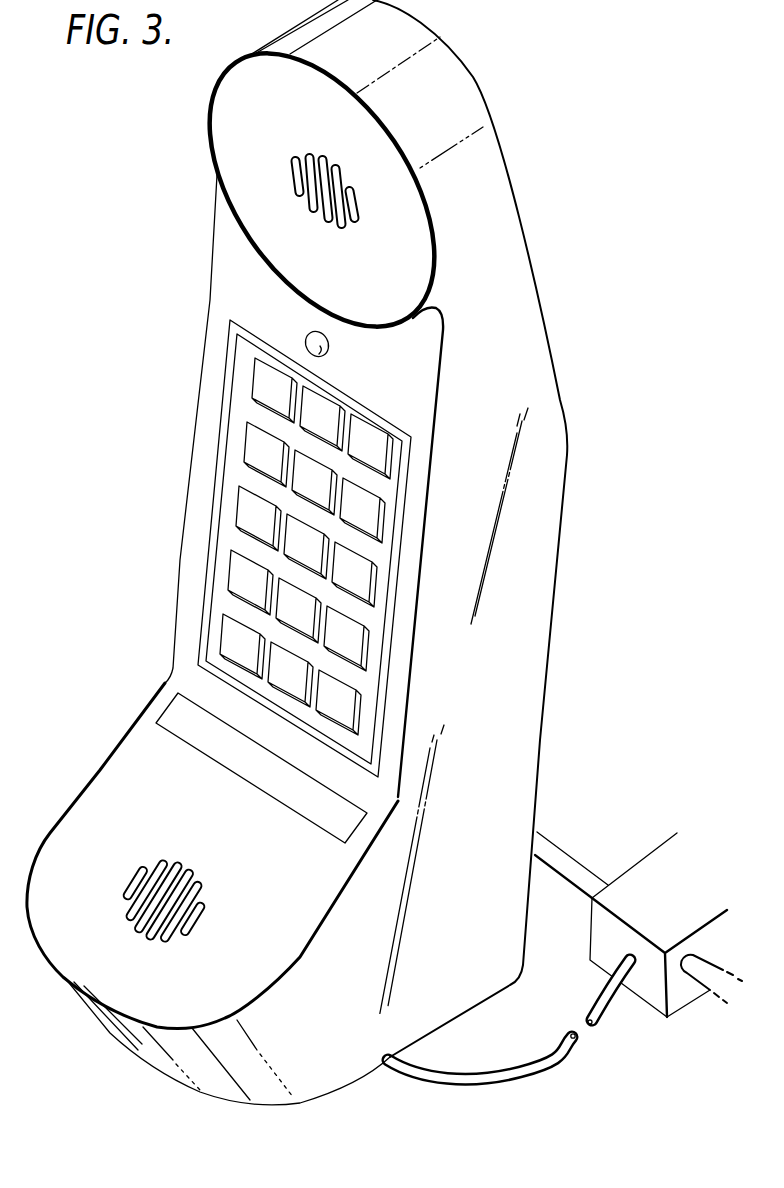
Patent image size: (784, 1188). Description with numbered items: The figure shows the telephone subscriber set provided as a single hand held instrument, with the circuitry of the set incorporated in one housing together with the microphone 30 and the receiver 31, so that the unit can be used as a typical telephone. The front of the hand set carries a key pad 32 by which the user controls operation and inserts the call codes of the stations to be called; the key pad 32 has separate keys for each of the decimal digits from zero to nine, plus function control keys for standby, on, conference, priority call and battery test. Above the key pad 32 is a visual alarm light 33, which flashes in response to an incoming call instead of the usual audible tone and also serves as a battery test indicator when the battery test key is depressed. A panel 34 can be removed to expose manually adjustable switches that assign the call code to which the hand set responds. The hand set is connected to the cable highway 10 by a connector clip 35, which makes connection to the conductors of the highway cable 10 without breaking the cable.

The cable highway 10 is at (552, 856).
The microphone 30 is at (141, 866).
The receiver 31 is at (284, 180).
The key pad 32 is at (238, 475).
The visual alarm light 33 is at (306, 338).
The panel 34 is at (176, 718).
The connector clip 35 is at (641, 877).